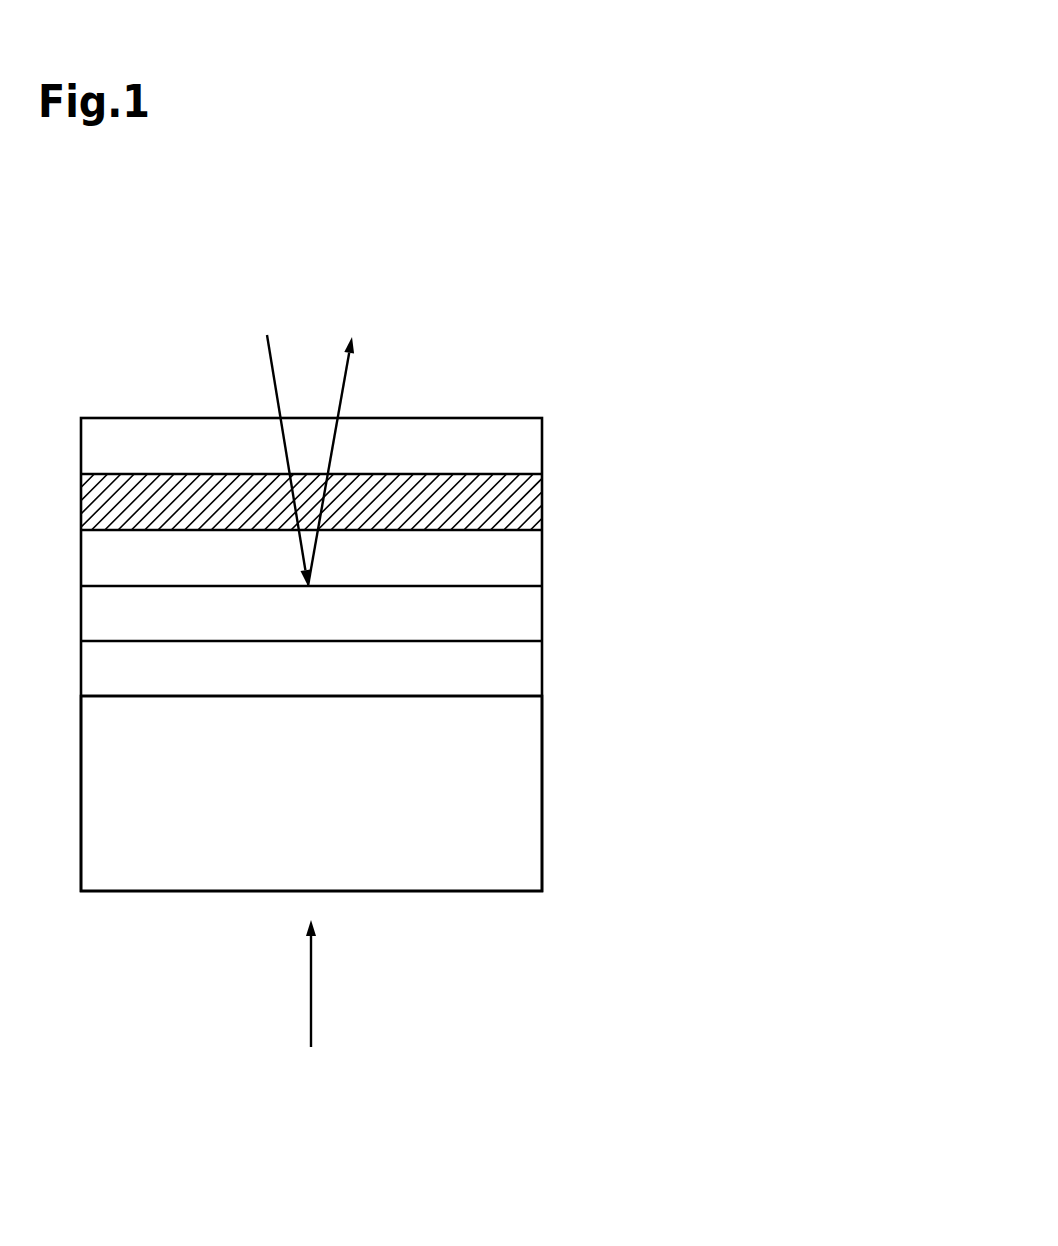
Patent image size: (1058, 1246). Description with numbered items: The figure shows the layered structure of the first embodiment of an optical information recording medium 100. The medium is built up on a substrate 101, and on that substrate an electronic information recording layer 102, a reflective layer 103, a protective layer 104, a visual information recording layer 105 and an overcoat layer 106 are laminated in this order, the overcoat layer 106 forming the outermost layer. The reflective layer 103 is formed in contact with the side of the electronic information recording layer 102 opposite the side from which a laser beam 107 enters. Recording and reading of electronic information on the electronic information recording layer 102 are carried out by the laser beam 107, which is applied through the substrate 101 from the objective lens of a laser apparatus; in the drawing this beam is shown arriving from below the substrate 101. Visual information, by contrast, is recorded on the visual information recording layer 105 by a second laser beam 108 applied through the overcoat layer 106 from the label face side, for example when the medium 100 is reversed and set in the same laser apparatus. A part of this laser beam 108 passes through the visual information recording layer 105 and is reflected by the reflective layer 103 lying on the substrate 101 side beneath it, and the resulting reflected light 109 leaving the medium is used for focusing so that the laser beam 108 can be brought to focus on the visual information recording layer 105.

The optical information recording medium 100 is at (472, 264).
The substrate 101 is at (527, 797).
The electronic information recording layer 102 is at (527, 671).
The reflective layer 103 is at (527, 617).
The protective layer 104 is at (527, 560).
The visual information recording layer 105 is at (527, 507).
The overcoat layer 106 is at (527, 450).
The laser beam 107 is at (393, 996).
The laser beam 108 is at (253, 431).
The reflected light 109 is at (428, 431).